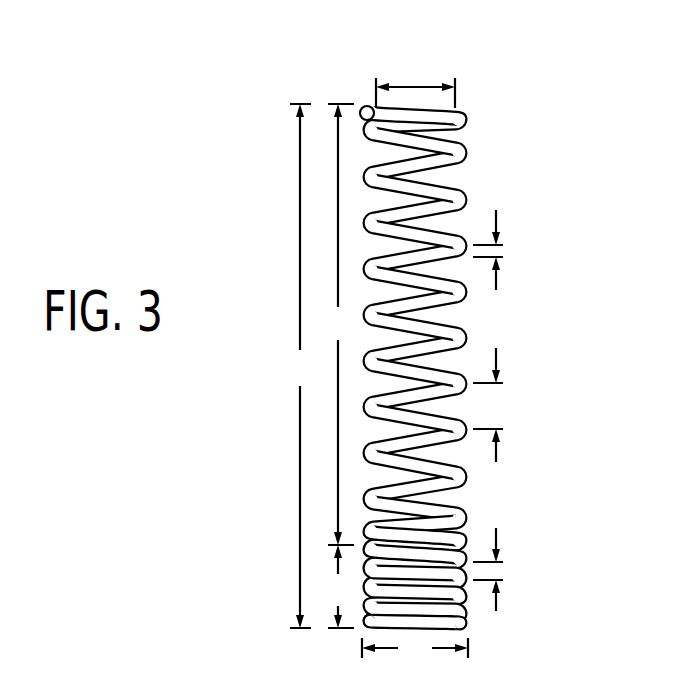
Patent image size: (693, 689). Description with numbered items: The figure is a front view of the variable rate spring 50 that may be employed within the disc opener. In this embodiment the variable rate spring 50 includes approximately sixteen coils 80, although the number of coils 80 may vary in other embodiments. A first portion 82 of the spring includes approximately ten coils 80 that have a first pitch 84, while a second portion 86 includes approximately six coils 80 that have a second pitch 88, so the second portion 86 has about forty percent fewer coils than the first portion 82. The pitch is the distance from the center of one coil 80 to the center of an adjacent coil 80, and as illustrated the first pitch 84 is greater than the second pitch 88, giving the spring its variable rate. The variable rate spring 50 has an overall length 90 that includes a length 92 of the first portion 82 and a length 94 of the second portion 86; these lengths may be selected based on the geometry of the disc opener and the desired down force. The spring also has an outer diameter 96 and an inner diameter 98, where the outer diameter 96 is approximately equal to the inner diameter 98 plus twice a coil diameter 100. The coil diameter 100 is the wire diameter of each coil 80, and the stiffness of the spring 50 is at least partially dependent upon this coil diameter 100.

The variable rate spring 50 is at (223, 140).
The coils 80 is at (514, 387).
The first portion 82 is at (547, 240).
The first pitch 84 is at (497, 455).
The second portion 86 is at (563, 568).
The second pitch 88 is at (497, 607).
The length 90 is at (300, 366).
The length of the first portion 92 is at (339, 324).
The length of the second portion 94 is at (339, 586).
The outer diameter 96 is at (415, 647).
The inner diameter 98 is at (417, 85).
The coil diameter 100 is at (497, 283).